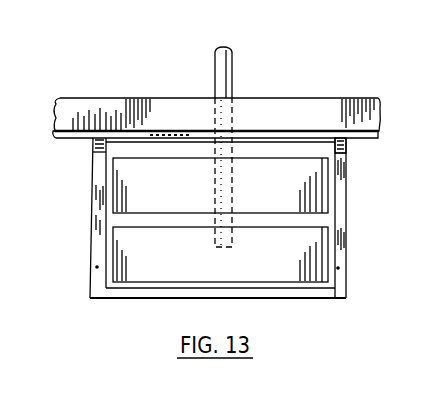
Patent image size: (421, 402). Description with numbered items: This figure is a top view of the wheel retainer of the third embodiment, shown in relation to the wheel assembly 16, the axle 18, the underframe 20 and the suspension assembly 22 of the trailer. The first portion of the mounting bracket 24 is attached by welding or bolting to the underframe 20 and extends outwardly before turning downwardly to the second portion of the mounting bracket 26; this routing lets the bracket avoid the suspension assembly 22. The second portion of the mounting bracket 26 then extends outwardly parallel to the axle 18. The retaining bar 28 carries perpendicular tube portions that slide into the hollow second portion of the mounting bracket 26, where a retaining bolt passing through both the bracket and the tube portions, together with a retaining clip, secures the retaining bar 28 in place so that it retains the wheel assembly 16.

The wheel assembly 16 is at (307, 262).
The axle 18 is at (232, 63).
The underframe 20 is at (130, 98).
The suspension assembly 22 is at (64, 142).
The first portion of the mounting bracket 24 is at (348, 150).
The second portion of the mounting bracket 26 is at (348, 217).
The retaining bar 28 is at (318, 299).